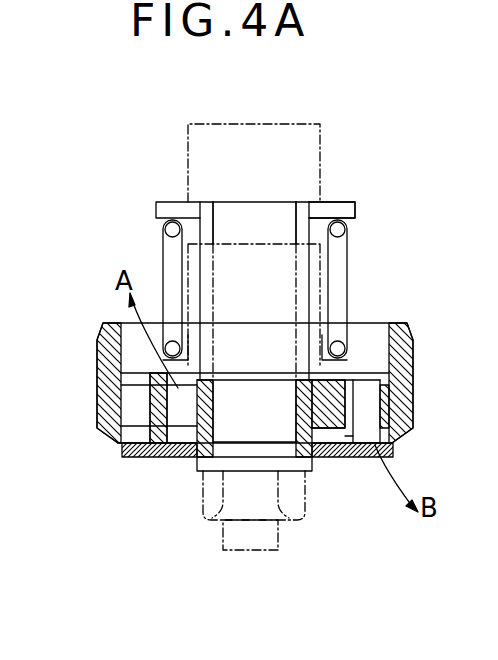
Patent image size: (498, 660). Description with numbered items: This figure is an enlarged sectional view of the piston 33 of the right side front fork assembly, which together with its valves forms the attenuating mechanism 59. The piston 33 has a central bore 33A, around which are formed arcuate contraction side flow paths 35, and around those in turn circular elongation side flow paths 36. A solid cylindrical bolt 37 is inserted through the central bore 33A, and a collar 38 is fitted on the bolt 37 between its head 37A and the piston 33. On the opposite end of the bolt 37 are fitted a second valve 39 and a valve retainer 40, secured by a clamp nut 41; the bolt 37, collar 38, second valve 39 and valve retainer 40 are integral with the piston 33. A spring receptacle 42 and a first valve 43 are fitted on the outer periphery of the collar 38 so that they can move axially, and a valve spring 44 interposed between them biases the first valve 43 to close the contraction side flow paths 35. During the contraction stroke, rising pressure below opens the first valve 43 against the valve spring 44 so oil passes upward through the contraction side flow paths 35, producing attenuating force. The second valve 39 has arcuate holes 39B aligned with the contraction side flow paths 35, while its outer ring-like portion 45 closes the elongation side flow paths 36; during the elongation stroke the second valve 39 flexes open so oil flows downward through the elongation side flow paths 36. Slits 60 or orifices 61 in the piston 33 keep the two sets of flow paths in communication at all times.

The piston 33 is at (113, 322).
The central bore 33A is at (254, 411).
The contraction side flow paths 35 is at (194, 382).
The elongation side flow paths 36 is at (137, 462).
The bolt 37 is at (264, 552).
The head 37A is at (289, 124).
The collar 38 is at (325, 202).
The second valve 39 is at (122, 453).
The arcuate holes 39B is at (352, 462).
The valve retainer 40 is at (317, 472).
The clamp nut 41 is at (209, 521).
The spring receptacle 42 is at (352, 202).
The first valve 43 is at (322, 253).
The valve spring 44 is at (158, 287).
The outer ring-like portion 45 is at (375, 452).
The attenuating mechanism 59 is at (100, 253).
The slits 60 is at (372, 440).
The orifices 61 is at (356, 425).